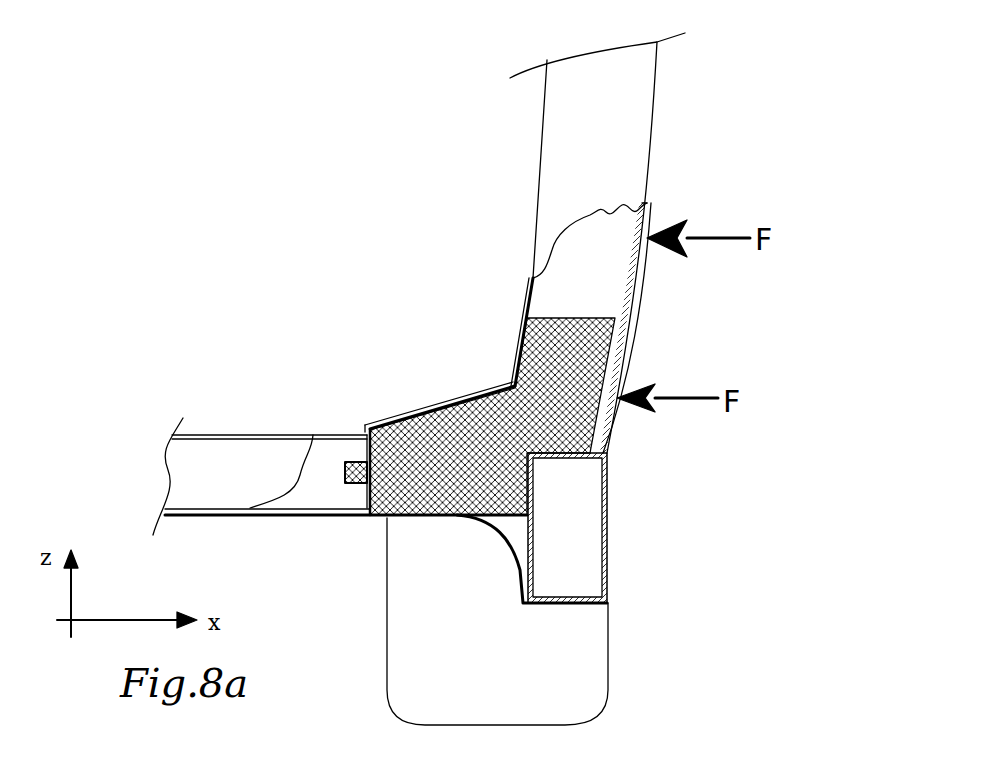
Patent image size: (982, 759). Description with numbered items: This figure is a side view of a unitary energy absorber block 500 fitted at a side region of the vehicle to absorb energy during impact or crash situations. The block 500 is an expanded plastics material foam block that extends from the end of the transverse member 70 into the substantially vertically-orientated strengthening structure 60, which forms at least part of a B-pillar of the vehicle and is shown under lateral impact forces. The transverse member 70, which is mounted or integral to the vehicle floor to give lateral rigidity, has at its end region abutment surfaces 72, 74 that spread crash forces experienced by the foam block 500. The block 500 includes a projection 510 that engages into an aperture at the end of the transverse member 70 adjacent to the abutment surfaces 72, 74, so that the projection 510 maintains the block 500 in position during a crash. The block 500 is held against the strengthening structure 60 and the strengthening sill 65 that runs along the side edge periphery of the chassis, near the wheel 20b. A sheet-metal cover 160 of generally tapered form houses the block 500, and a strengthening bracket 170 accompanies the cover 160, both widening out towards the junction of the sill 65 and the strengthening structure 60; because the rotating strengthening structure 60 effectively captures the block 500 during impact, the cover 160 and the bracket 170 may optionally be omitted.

The strengthening structure 60 is at (615, 165).
The unitary block 500 is at (572, 355).
The strengthening bracket 170 is at (513, 375).
The cover 160 is at (430, 407).
The transverse member 70 is at (220, 448).
The abutment surface 74 is at (367, 448).
The projection 510 is at (345, 470).
The abutment surface 72 is at (367, 493).
The strengthening sill 65 is at (575, 510).
The wheel 20b is at (560, 628).